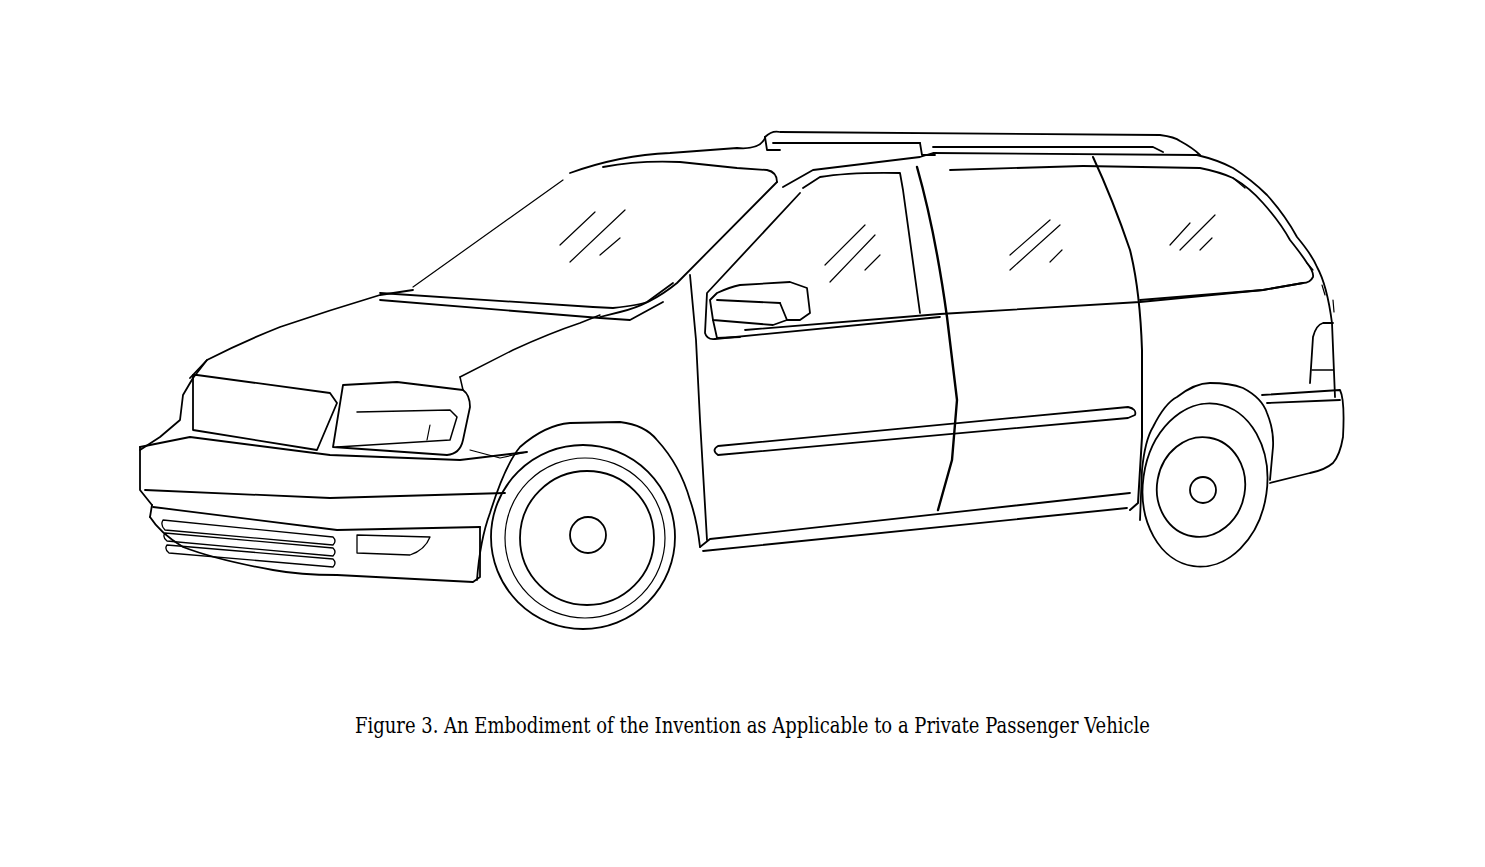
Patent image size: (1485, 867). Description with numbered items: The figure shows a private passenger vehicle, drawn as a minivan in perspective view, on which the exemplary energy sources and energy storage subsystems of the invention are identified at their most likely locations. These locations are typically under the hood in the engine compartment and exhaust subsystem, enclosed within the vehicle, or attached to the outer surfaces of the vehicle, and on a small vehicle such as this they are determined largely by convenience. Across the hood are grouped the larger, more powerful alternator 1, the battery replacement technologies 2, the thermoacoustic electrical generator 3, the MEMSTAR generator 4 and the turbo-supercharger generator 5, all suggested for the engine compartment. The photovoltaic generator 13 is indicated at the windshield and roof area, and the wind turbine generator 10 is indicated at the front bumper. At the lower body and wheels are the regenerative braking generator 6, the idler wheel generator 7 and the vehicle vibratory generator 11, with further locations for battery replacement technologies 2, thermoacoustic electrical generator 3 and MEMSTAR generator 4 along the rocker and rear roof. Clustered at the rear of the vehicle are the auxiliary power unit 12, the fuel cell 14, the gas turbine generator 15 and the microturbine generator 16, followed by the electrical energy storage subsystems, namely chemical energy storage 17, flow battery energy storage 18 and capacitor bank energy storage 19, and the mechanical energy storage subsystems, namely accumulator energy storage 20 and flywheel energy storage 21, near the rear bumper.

The larger, more powerful alternator 1 is at (237, 356).
The battery replacement technologies 2 is at (287, 357).
The thermoacoustic electrical generator 3 is at (337, 357).
The MEMSTAR generator 4 is at (388, 357).
The turbo-supercharger generator 5 is at (440, 355).
The regenerative braking generator 6 is at (1185, 502).
The idler wheel generator 7 is at (1115, 502).
The wind turbine generator 10 is at (210, 560).
The vehicle vibratory generator 11 is at (1270, 483).
The auxiliary power unit 12 is at (1288, 205).
The photovoltaic generator 13 is at (491, 333).
The fuel cell 14 is at (1307, 225).
The gas turbine generator 15 is at (1320, 253).
The microturbine generator 16 is at (1322, 282).
The chemical energy storage 17 is at (1338, 300).
The flow battery energy storage 18 is at (1338, 316).
The capacitor bank energy storage 19 is at (1338, 352).
The accumulator energy storage 20 is at (1342, 383).
The flywheel energy storage 21 is at (1346, 420).